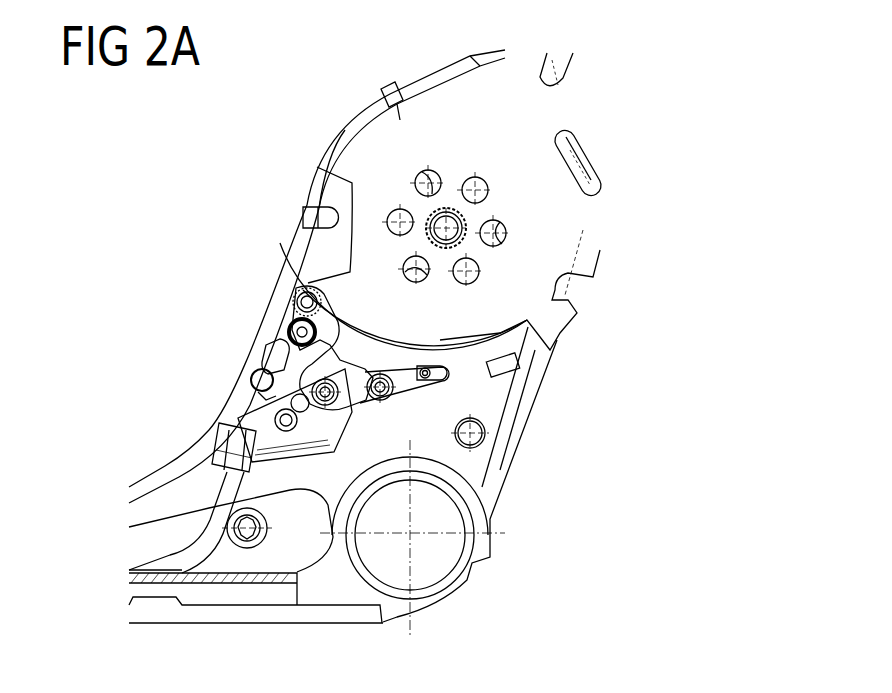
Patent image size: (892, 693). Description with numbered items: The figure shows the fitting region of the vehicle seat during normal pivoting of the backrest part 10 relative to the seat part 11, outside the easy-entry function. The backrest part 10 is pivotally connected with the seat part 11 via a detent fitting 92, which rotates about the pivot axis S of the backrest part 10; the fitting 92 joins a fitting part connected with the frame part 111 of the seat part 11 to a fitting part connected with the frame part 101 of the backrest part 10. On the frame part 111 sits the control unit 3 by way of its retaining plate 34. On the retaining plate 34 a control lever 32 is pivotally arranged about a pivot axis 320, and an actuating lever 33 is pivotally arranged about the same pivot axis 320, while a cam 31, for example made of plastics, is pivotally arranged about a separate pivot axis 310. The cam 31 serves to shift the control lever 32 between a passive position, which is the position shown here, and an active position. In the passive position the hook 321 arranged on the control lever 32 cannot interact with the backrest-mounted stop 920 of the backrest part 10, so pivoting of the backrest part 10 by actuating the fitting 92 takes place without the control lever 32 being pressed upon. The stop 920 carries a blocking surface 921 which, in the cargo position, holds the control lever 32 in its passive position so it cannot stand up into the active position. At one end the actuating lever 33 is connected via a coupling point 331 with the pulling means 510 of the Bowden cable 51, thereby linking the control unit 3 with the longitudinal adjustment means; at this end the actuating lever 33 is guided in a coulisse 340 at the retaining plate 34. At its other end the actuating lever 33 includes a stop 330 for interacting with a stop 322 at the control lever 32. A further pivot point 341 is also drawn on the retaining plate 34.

The fitting 92 is at (428, 182).
The stop 920 is at (322, 187).
The blocking surface 921 is at (310, 185).
The control lever 32 is at (310, 285).
The pivot axis S is at (460, 217).
The frame part 101 is at (593, 197).
The backrest part 10 is at (583, 217).
The seat part 11 is at (497, 468).
The frame part 111 is at (505, 442).
The Bowden cable 51 is at (190, 550).
The pulling means 510 is at (253, 400).
The stop 330 is at (335, 442).
The cam 31 is at (290, 360).
The pivot axis 310 is at (295, 328).
The hook 321 is at (316, 296).
The pivot axis 320 is at (338, 386).
The pivot pin 341 is at (390, 380).
The retaining plate 34 is at (441, 377).
The stop 322 is at (363, 408).
The coulisse 340 is at (262, 343).
The coupling point 331 is at (253, 372).
The actuating lever 33 is at (258, 381).
The control unit 3 is at (232, 347).